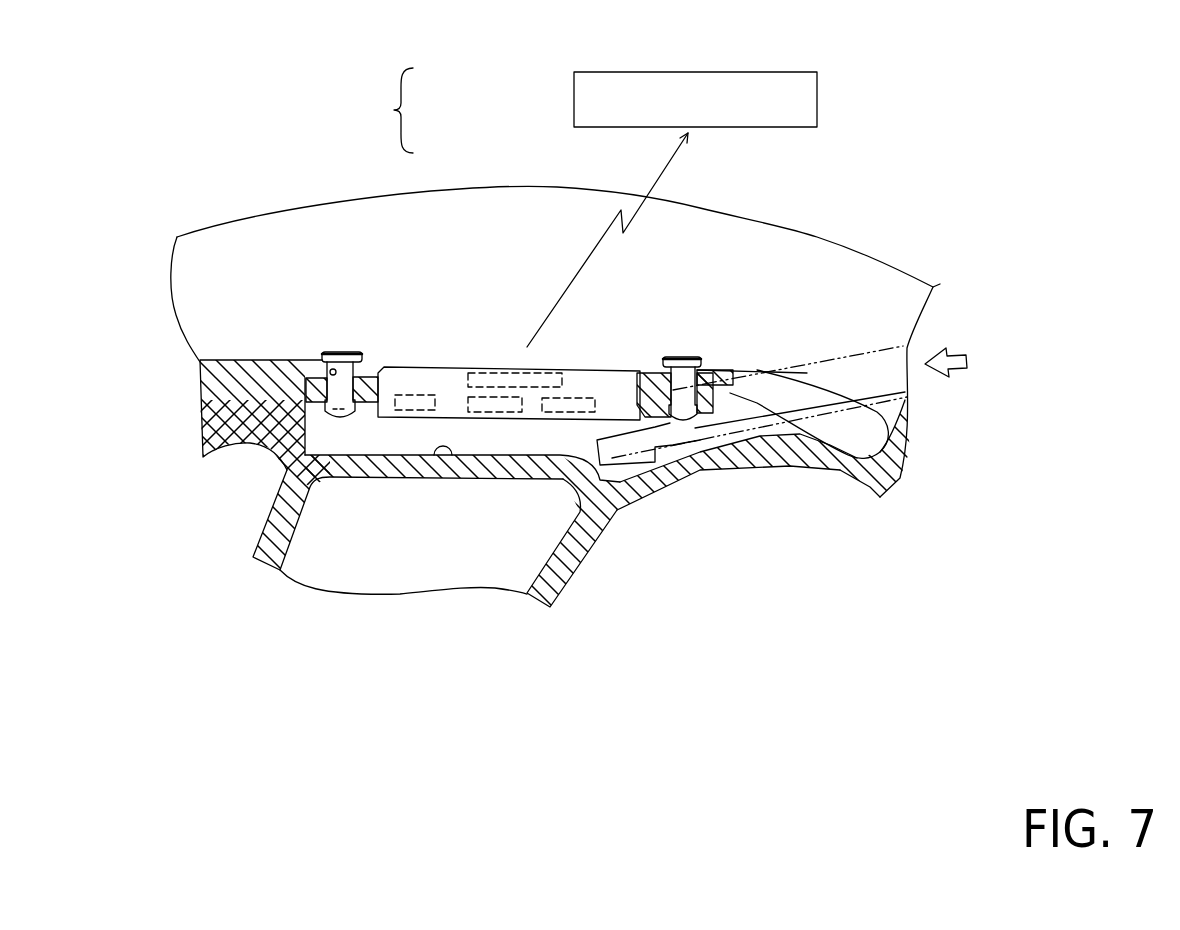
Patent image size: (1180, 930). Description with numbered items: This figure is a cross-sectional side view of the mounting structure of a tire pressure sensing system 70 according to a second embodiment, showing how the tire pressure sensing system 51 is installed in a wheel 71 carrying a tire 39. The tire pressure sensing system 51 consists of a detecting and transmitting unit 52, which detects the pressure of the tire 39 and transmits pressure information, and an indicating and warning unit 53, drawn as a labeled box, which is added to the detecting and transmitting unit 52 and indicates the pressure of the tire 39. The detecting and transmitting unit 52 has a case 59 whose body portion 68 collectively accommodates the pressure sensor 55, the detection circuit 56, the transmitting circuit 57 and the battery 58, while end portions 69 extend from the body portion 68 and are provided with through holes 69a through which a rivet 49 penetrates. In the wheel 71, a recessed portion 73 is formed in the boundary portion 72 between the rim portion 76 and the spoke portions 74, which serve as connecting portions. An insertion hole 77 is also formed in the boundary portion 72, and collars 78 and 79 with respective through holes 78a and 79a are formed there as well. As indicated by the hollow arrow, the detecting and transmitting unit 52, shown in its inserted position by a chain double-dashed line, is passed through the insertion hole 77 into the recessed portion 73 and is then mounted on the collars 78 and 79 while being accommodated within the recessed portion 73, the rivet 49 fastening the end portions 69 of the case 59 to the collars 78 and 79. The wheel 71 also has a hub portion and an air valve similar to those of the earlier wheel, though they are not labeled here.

The mounting structure of a tire pressure sensing system 70 is at (190, 72).
The tire 39 is at (822, 233).
The tire pressure sensing system 51 is at (384, 110).
The detecting and transmitting unit 52 is at (518, 300).
The indicating and warning unit 53 is at (574, 92).
The pressure sensor 55 is at (490, 370).
The detection circuit 56 is at (467, 400).
The transmitting circuit 57 is at (572, 392).
The battery 58 is at (412, 395).
The case 59 is at (548, 352).
The body portion 68 is at (643, 380).
The end portion 69 is at (280, 455).
The through hole 69a is at (273, 447).
The wheel 71 is at (574, 501).
The boundary portion 72 is at (643, 468).
The recessed portion 73 is at (437, 455).
The spoke portion 74 is at (573, 573).
The rim portion 76 is at (895, 477).
The insertion hole 77 is at (740, 365).
The collar 78 is at (303, 349).
The through hole 78a is at (318, 376).
The collar 79 is at (722, 349).
The through hole 79a is at (713, 370).
The rivet 49 is at (333, 354).